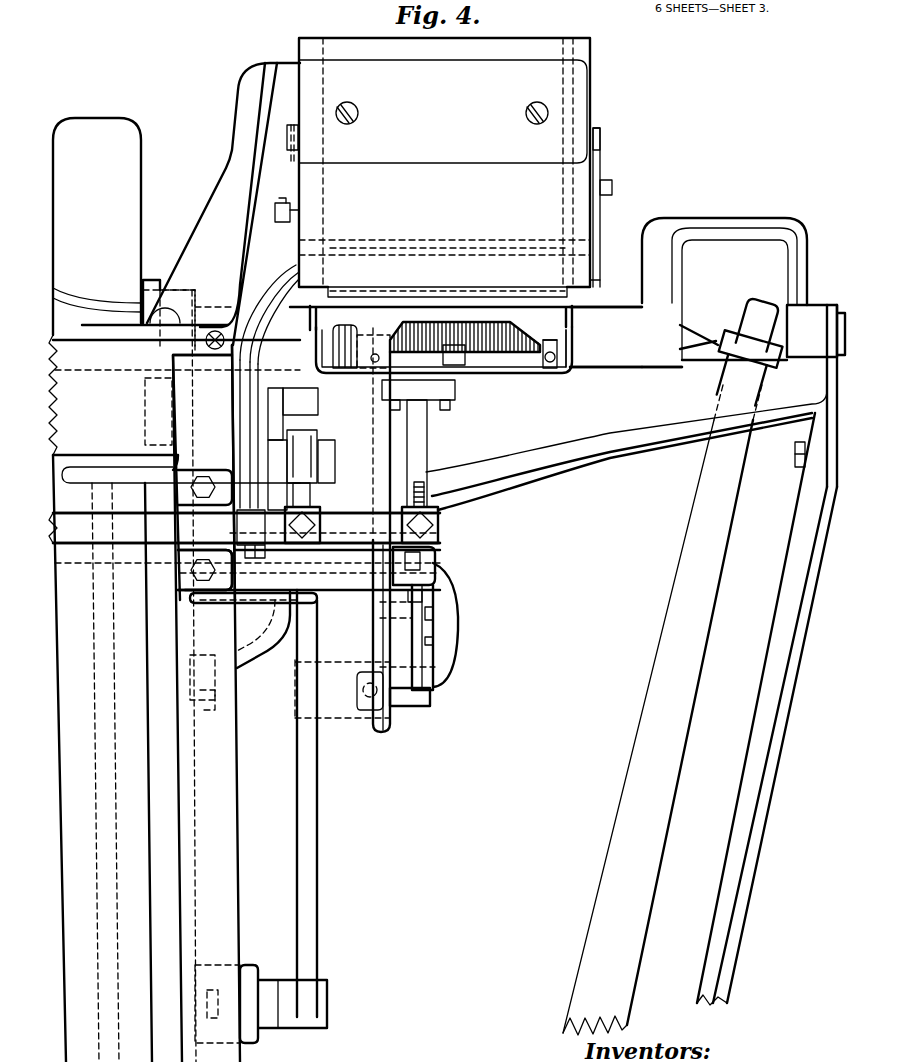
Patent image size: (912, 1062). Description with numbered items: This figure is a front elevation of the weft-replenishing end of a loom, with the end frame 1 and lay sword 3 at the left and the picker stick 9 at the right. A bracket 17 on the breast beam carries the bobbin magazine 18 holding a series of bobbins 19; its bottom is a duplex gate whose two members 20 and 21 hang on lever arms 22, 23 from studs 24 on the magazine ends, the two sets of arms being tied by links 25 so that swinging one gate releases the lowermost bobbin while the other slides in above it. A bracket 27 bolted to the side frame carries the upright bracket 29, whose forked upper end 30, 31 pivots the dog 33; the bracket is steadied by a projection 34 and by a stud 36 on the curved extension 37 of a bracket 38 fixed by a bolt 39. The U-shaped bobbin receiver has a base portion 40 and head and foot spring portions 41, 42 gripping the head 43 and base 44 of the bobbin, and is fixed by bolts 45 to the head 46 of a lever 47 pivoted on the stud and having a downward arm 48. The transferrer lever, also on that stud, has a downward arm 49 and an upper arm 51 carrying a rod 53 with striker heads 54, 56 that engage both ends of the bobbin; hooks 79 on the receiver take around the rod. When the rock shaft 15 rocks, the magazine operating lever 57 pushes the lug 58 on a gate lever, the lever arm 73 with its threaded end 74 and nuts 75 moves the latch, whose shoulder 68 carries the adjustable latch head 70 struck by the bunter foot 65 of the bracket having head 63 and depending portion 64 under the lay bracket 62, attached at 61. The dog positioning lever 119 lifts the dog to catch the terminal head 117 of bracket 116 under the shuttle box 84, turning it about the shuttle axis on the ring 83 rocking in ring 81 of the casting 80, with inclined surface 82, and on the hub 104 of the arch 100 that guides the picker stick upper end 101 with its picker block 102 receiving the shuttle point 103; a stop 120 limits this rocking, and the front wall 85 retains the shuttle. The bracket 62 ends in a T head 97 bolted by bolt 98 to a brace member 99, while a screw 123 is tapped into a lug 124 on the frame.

The end frame 1 is at (238, 797).
The lay sword 3 is at (148, 762).
The picker stick 9 is at (643, 712).
The rock shaft 15 is at (138, 543).
The bracket 17 is at (230, 150).
The bobbin magazine 18 is at (299, 46).
The bobbin 19 is at (505, 334).
The gate or shelf 20 is at (433, 290).
The gate or shelf 21 is at (433, 248).
The lever arm 22 is at (290, 278).
The lever arm 23 is at (323, 205).
The stud 24 is at (288, 140).
The link 25 is at (601, 213).
The bracket 27 is at (258, 1040).
The upright bracket 29 is at (318, 873).
The fork 30 is at (317, 452).
The fork 31 is at (268, 452).
The dog 33 is at (327, 471).
The projection 34 is at (190, 600).
The stud 36 is at (436, 566).
The curved upper extension 37 is at (213, 552).
The bracket 38 is at (215, 700).
The bolt 39 is at (218, 680).
The base portion 40 is at (497, 366).
The head spring portion 41 is at (574, 320).
The foot spring portion 42 is at (309, 327).
The bobbin head 43 is at (572, 346).
The bobbin base 44 is at (322, 345).
The bolt 45 is at (385, 401).
The head 46 is at (425, 405).
The lever 47 is at (442, 475).
The downwardly extending arm 48 is at (450, 668).
The downwardly extending arm 49 is at (392, 720).
The upper arm 51 is at (390, 440).
The rod 53 is at (548, 370).
The striker head 54 is at (550, 340).
The striker head 56 is at (347, 370).
The magazine operating lever 57 is at (263, 340).
The lug 58 is at (275, 212).
The under side of the lay 61 is at (100, 457).
The bracket 62 is at (594, 446).
The head 63 is at (373, 594).
The depending portion 64 is at (371, 604).
The foot 65 is at (434, 641).
The shoulder 68 is at (434, 614).
The latch head 70 is at (436, 594).
The lever arm 73 is at (438, 520).
The threaded end 74 is at (432, 478).
The nut 75 is at (426, 498).
The hook 79 is at (458, 363).
The cage-like casting 80 is at (116, 318).
The ring or annulus 81 is at (154, 280).
The inclined inner surface 82 is at (150, 404).
The ring or annulus 83 is at (196, 292).
The shuttle box 84 is at (605, 367).
The front wall 85 is at (645, 367).
The T head 97 is at (827, 376).
The bolt 98 is at (795, 462).
The brace member 99 is at (790, 556).
The arch 100 is at (722, 228).
The upper end of picker stick 101 is at (738, 300).
The picker block 102 is at (714, 335).
The shuttle point 103 is at (716, 365).
The hub-like portion 104 is at (805, 320).
The bracket 116 is at (272, 395).
The terminal head 117 is at (310, 408).
The dog positioning lever 119 is at (310, 493).
The stop 120 is at (212, 392).
The screw 123 is at (365, 672).
The lug 124 is at (355, 720).